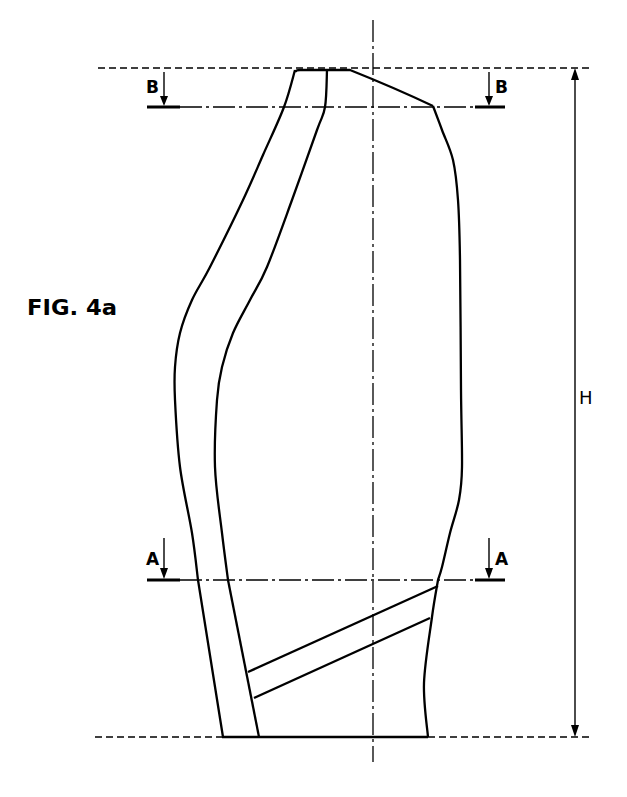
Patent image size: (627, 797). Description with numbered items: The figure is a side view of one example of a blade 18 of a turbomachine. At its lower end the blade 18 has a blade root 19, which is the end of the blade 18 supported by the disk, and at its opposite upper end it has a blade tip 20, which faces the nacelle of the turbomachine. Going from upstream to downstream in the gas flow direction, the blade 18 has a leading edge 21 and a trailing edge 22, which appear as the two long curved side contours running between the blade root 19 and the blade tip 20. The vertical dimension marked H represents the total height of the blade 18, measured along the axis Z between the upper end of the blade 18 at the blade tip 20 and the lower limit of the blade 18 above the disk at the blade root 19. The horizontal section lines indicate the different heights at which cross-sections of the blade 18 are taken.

The blade 18 is at (512, 287).
The blade root 19 is at (405, 688).
The blade tip 20 is at (348, 88).
The leading edge 21 is at (175, 392).
The trailing edge 22 is at (462, 392).